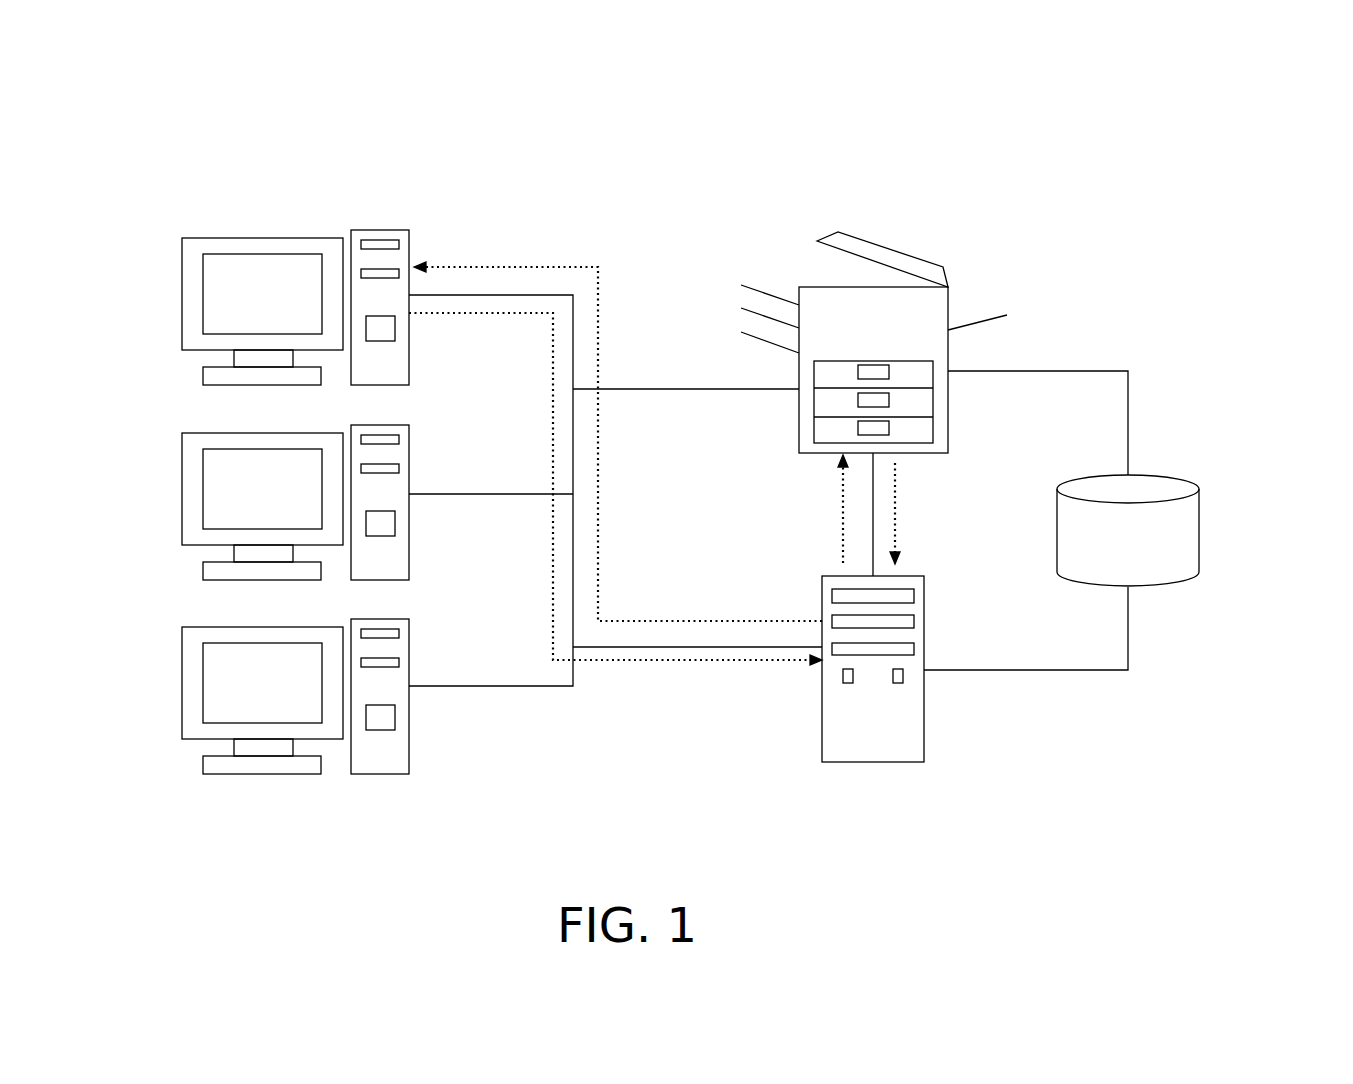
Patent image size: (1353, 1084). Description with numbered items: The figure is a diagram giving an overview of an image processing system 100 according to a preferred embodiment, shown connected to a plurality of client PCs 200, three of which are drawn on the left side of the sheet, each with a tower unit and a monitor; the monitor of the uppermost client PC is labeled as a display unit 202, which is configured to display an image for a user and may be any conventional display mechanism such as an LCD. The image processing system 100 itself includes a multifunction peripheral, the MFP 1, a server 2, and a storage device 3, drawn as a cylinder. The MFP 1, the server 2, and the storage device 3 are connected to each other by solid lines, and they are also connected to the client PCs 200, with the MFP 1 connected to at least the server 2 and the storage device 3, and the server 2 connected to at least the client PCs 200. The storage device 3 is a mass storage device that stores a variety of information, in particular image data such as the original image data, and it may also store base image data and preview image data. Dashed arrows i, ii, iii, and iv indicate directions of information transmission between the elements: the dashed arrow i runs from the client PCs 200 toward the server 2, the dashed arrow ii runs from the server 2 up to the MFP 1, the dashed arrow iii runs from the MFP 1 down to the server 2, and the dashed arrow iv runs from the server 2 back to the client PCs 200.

The image processing system 100 is at (1013, 127).
The multifunction peripheral (MFP) 1 is at (900, 255).
The server 2 is at (924, 738).
The storage device 3 is at (1200, 555).
The client PC 200 is at (155, 254).
The display unit 202 is at (254, 238).
The dashed arrow i is at (552, 360).
The dashed arrow ii is at (840, 513).
The dashed arrow iii is at (903, 523).
The dashed arrow iv is at (582, 268).